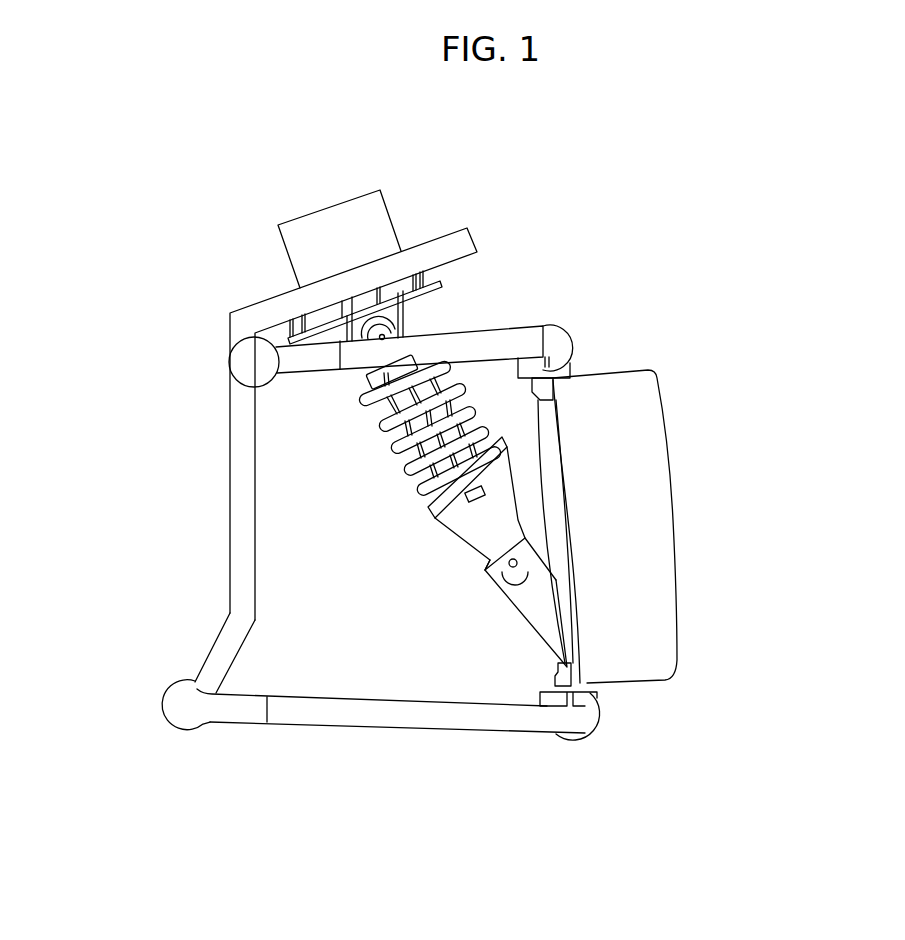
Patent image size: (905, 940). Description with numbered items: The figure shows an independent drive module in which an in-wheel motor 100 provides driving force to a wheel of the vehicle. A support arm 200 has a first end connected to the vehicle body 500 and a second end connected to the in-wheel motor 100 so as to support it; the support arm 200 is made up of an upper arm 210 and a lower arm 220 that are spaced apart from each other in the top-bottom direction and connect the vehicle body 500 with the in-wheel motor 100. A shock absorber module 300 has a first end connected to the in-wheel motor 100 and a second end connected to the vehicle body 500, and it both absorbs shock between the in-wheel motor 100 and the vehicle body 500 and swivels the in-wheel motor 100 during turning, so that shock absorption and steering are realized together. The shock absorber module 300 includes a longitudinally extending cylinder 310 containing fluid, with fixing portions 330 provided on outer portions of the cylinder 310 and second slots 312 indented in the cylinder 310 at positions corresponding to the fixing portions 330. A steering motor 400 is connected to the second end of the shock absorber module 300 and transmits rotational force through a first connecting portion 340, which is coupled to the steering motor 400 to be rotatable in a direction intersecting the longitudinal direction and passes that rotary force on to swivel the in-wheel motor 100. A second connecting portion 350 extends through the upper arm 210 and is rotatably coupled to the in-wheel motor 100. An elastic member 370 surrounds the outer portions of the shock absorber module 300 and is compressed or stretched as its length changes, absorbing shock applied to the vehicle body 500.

The in-wheel motor 100 is at (654, 528).
The support arm 200 is at (473, 577).
The upper arm 210 is at (512, 332).
The lower arm 220 is at (487, 718).
The shock absorber module 300 is at (457, 459).
The cylinder 310 is at (490, 510).
The second slots 312 is at (506, 490).
The fixing portions 330 is at (543, 363).
The first connecting portion 340 is at (397, 325).
The second connecting portion 350 is at (532, 563).
The elastic member 370 is at (381, 428).
The steering motor 400 is at (350, 210).
The vehicle body 500 is at (242, 590).